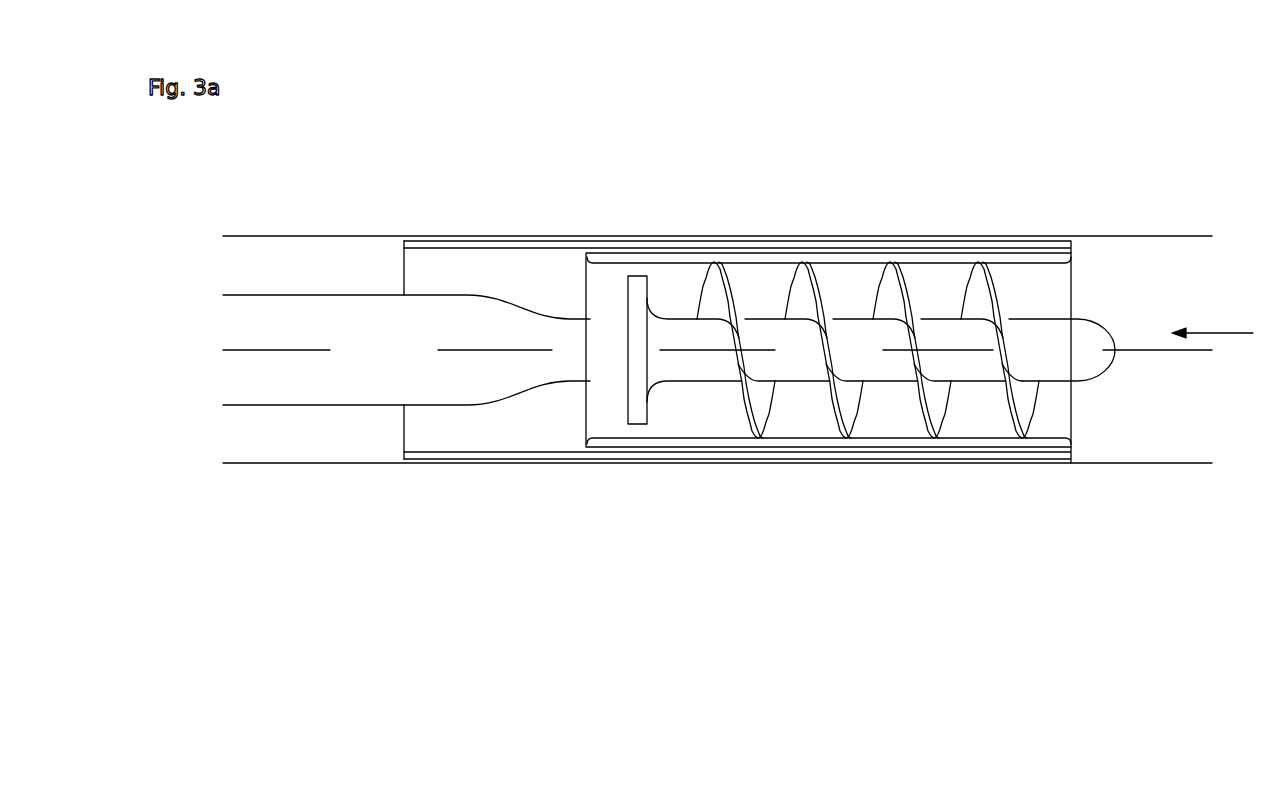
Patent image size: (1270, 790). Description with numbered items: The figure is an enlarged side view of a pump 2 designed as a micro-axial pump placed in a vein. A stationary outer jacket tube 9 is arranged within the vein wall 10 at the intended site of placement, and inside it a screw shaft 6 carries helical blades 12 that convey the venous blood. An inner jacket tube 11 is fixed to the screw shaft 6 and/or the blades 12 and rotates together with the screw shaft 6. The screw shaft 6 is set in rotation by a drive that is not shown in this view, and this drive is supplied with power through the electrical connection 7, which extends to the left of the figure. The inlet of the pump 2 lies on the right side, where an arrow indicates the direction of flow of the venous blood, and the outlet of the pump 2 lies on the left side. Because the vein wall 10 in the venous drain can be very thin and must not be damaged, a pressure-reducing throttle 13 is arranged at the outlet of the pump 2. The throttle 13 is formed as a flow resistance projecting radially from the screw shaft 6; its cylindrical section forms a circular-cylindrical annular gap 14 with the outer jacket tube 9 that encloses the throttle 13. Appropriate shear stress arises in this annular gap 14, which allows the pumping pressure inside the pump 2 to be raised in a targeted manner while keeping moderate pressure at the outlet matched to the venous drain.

The pump 2 is at (928, 547).
The screw shaft 6 is at (928, 332).
The electrical connection 7 is at (325, 317).
The outer jacket tube 9 is at (480, 246).
The vein wall 10 is at (394, 238).
The inner jacket tube 11 is at (627, 260).
The blades 12 is at (803, 297).
The throttle 13 is at (647, 305).
The annular gap 14 is at (641, 428).